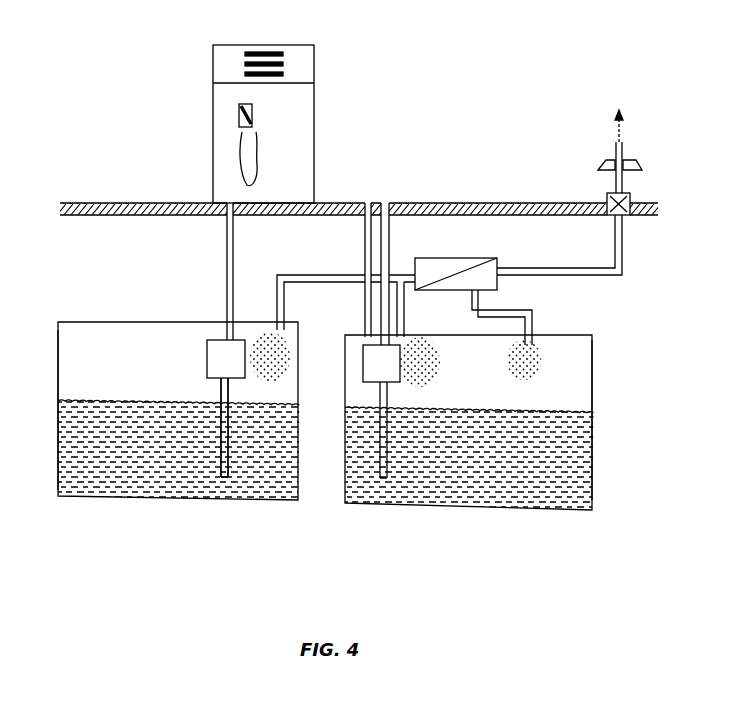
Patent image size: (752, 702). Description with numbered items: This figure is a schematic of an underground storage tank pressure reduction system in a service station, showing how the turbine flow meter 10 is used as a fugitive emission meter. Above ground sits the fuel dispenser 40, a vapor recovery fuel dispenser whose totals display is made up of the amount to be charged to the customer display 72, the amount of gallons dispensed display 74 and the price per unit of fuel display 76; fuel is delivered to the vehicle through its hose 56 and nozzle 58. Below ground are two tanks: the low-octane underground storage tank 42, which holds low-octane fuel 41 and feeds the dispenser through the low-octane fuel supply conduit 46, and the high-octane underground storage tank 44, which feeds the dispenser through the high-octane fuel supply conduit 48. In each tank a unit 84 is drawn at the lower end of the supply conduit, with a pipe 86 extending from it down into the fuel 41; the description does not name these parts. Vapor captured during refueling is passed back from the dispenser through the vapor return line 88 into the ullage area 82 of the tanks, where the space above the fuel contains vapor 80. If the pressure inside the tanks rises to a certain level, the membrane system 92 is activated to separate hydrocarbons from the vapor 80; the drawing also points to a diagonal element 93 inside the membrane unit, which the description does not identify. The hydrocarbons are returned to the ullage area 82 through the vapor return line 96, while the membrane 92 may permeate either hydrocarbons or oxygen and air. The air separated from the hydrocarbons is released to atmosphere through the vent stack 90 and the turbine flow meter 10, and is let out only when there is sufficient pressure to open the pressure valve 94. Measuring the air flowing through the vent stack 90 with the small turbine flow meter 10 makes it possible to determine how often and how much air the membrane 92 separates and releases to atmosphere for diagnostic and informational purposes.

The turbine flow meter 10 is at (632, 200).
The fuel dispenser 40 is at (293, 42).
The low-octane fuel 41 is at (140, 487).
The low-octane underground storage tank 42 is at (108, 322).
The high-octane underground storage tank 44 is at (593, 396).
The low-octane fuel supply conduit 46 is at (227, 258).
The high-octane fuel supply conduit 48 is at (389, 243).
The hose 56 is at (258, 167).
The nozzle 58 is at (253, 123).
The amount to be charged to the customer display 72 is at (248, 53).
The amount of gallons dispensed display 74 is at (248, 63).
The price per unit of fuel display 76 is at (248, 75).
The vapor 80 is at (291, 357).
The ullage area 82 is at (70, 352).
The submersible pump 84 is at (207, 350).
The fuel pickup pipe 86 is at (226, 478).
The vapor return line 88 is at (365, 318).
The vent stack 90 is at (325, 276).
The membrane system 92 is at (486, 256).
The valve diaphragm 93 is at (463, 272).
The pressure valve 94 is at (642, 166).
The vapor return line 96 is at (531, 342).